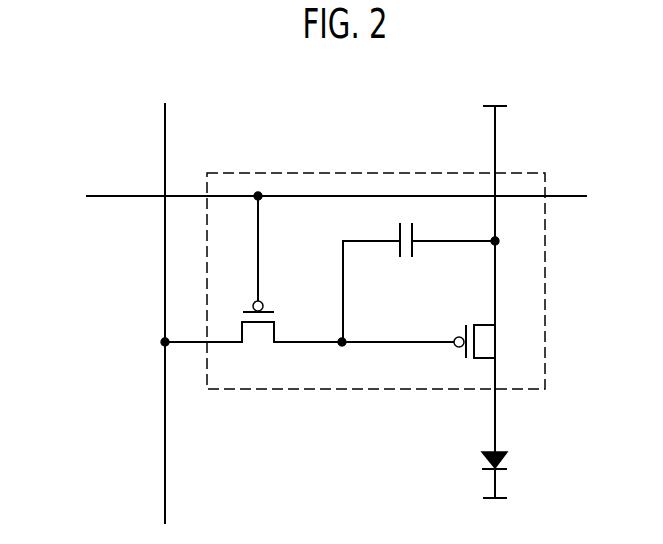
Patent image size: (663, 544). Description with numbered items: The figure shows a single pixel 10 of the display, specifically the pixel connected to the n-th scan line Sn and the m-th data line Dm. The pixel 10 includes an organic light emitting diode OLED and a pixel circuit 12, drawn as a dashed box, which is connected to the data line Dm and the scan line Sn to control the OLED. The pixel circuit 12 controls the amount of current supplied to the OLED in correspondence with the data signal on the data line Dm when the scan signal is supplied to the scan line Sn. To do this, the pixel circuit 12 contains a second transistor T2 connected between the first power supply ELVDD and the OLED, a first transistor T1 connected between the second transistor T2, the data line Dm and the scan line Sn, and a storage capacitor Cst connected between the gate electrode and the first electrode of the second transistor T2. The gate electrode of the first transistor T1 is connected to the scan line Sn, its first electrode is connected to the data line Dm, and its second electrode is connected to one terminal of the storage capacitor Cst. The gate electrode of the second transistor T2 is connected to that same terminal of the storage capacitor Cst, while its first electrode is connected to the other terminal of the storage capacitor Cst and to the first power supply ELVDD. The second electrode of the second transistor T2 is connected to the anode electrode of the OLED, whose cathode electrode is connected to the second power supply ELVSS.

The pixel 10 is at (54, 66).
The pixel circuit 12 is at (545, 252).
The data line Dm is at (165, 113).
The scan line Sn is at (100, 196).
The first power supply ELVDD is at (494, 157).
The second power supply ELVSS is at (493, 516).
The first transistor T1 is at (253, 281).
The second transistor T2 is at (428, 346).
The storage capacitor Cst is at (421, 282).
The organic light emitting diode OLED is at (466, 472).